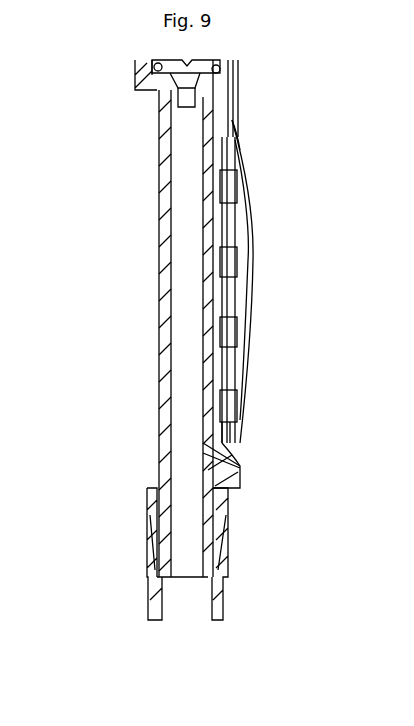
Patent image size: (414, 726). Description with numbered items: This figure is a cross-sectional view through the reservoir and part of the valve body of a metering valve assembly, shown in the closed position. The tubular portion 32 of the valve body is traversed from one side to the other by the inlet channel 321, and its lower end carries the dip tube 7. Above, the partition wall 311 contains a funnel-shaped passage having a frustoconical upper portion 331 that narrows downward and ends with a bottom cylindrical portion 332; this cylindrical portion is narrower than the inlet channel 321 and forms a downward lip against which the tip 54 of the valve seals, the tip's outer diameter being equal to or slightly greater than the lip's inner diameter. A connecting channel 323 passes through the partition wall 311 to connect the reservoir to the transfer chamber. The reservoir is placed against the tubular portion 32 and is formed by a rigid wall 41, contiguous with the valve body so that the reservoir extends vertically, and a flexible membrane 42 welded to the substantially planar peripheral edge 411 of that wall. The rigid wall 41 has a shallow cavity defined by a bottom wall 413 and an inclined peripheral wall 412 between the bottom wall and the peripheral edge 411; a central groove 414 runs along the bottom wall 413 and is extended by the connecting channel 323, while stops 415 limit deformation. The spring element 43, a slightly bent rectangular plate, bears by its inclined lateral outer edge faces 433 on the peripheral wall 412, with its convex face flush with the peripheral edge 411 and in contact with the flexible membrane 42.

The dip tube 7 is at (217, 598).
The tubular portion 32 is at (165, 177).
The rigid wall 41 is at (212, 447).
The flexible membrane 42 is at (247, 190).
The spring element 43 is at (252, 240).
The tip 54 is at (187, 77).
The partition wall 311 is at (155, 85).
The inlet channel 321 is at (182, 280).
The connecting channel 323 is at (217, 112).
The frustoconical upper portion 331 is at (173, 88).
The bottom cylindrical portion 332 is at (177, 100).
The peripheral edge 411 is at (240, 477).
The peripheral wall 412 is at (240, 115).
The bottom wall 413 is at (225, 297).
The central groove 414 is at (222, 353).
The stops 415 is at (229, 260).
The lateral outer edge faces 433 is at (240, 150).